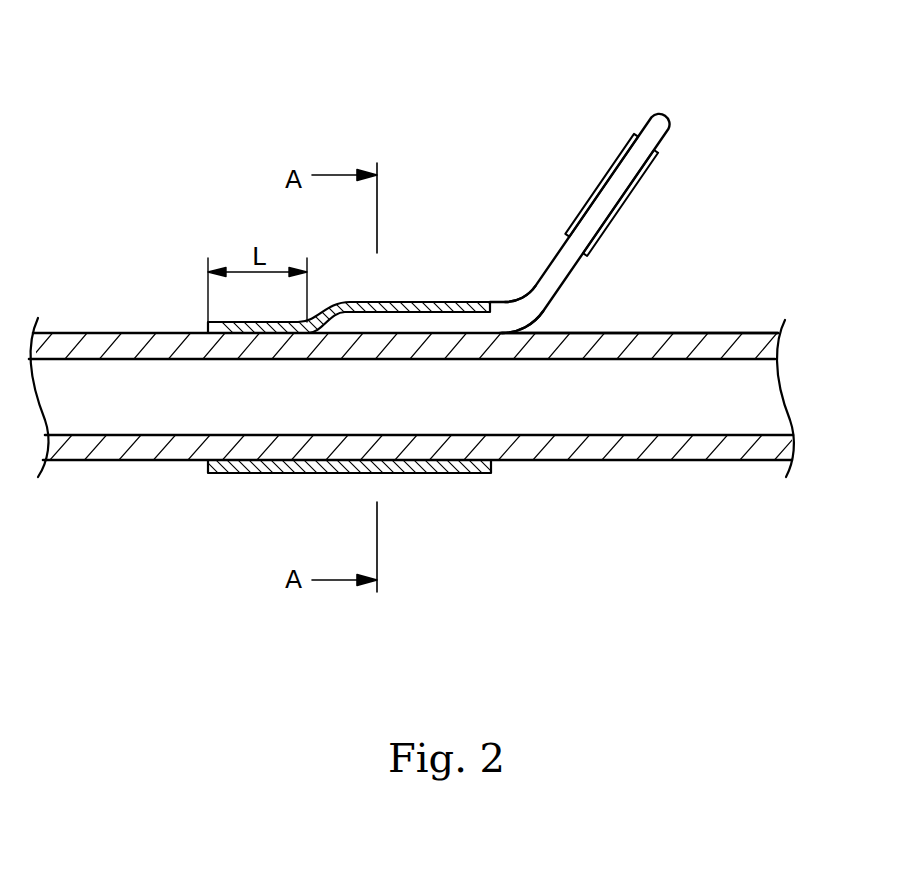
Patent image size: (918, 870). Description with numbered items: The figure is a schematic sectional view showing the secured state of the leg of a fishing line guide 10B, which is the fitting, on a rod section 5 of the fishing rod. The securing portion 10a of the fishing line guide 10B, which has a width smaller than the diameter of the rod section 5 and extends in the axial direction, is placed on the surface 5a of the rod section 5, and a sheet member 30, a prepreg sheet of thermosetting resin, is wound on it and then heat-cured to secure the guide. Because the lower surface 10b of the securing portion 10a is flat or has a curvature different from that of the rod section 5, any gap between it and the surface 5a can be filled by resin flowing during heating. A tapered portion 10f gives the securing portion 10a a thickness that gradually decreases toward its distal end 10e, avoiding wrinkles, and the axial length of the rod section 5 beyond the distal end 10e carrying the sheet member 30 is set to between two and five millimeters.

The rod section 5 is at (717, 345).
The surface of the rod section 5a is at (630, 333).
The fishing line guide 10B is at (522, 266).
The securing portion 10a is at (414, 318).
The lower surface of the securing portion 10b is at (428, 335).
The distal end of the securing portion 10e is at (308, 322).
The tapered portion 10f is at (325, 310).
The sheet member 30 is at (437, 467).